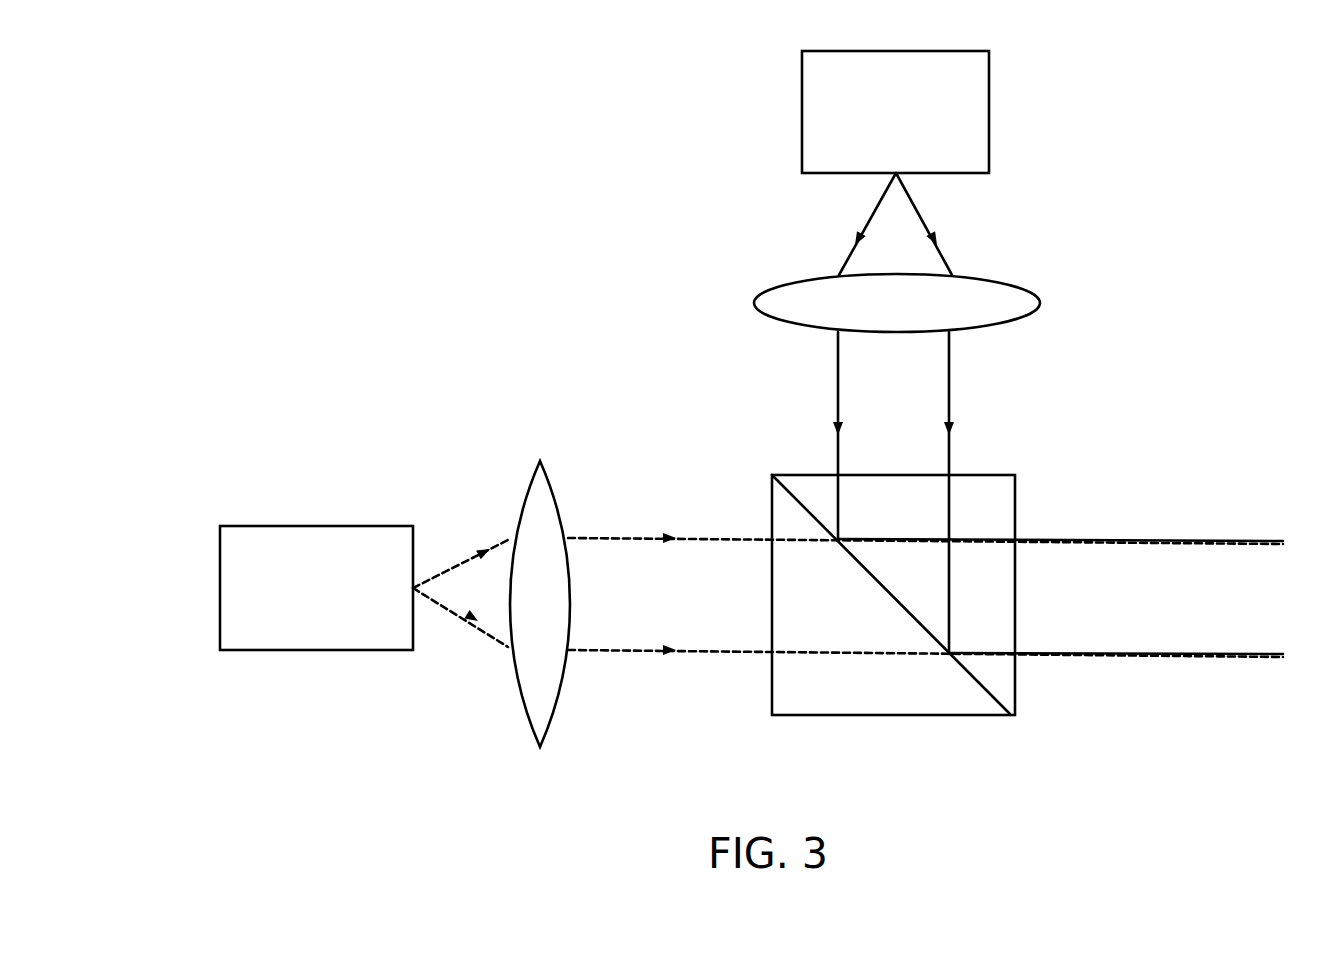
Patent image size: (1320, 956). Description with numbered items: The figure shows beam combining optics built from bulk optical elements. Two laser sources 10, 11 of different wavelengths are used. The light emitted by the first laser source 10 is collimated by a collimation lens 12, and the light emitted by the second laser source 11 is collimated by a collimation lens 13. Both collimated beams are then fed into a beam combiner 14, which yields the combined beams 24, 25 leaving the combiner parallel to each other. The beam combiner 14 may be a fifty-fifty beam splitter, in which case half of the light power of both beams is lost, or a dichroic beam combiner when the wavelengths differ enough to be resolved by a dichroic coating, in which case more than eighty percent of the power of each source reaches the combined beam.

The laser source 10 is at (285, 623).
The laser source 11 is at (978, 113).
The collimation lens 12 is at (563, 677).
The collimation lens 13 is at (1003, 298).
The beam combiner 14 is at (835, 695).
The combined beam 24 is at (1152, 542).
The combined beam 25 is at (1212, 547).